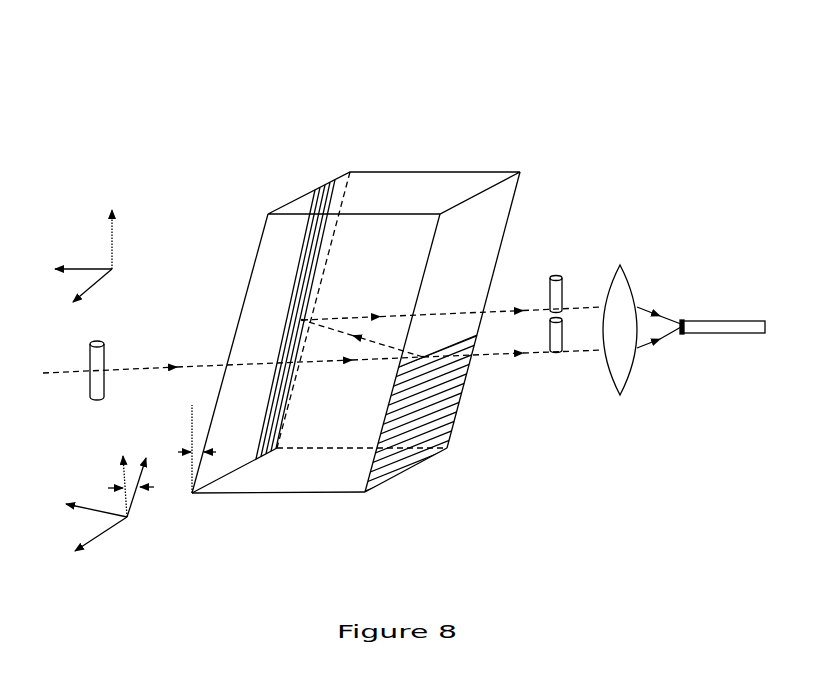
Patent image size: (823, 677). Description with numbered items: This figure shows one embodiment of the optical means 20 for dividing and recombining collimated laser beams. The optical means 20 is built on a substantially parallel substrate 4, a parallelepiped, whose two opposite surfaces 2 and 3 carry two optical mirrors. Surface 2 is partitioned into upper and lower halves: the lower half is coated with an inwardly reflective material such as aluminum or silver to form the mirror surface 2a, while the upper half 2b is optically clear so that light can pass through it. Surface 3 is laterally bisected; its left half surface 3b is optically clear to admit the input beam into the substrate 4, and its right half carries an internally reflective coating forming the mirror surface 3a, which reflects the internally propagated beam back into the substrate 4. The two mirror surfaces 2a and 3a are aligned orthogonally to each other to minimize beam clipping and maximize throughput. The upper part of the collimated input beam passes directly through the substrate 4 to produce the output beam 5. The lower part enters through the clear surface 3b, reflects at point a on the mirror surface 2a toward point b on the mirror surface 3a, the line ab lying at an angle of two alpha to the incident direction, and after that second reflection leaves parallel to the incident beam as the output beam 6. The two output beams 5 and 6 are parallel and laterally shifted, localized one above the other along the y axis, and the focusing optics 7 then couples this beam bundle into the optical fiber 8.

The optical means 20 is at (416, 96).
The surface 2 is at (393, 304).
The mirror surface 2a is at (447, 405).
The upper half 2b is at (498, 213).
The surface 3 is at (271, 304).
The mirror surface 3a is at (331, 175).
The left half surface 3b is at (278, 275).
The substrate 4 is at (394, 176).
The output beam 5 is at (564, 335).
The output beam 6 is at (565, 281).
The focusing optics 7 is at (620, 344).
The optical fiber 8 is at (722, 308).
The point a is at (432, 344).
The point b is at (308, 315).